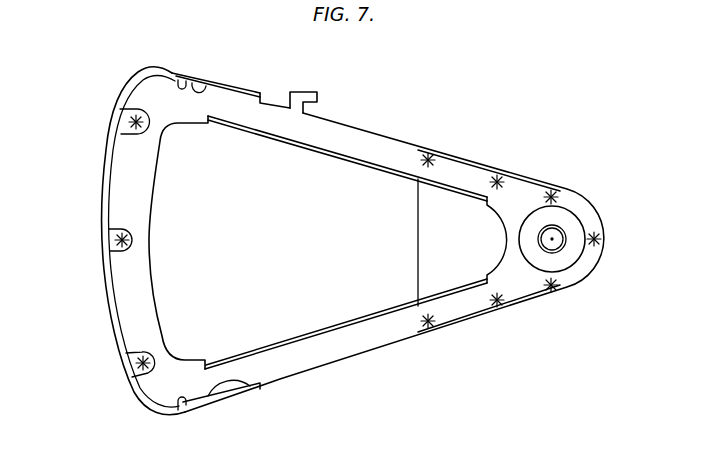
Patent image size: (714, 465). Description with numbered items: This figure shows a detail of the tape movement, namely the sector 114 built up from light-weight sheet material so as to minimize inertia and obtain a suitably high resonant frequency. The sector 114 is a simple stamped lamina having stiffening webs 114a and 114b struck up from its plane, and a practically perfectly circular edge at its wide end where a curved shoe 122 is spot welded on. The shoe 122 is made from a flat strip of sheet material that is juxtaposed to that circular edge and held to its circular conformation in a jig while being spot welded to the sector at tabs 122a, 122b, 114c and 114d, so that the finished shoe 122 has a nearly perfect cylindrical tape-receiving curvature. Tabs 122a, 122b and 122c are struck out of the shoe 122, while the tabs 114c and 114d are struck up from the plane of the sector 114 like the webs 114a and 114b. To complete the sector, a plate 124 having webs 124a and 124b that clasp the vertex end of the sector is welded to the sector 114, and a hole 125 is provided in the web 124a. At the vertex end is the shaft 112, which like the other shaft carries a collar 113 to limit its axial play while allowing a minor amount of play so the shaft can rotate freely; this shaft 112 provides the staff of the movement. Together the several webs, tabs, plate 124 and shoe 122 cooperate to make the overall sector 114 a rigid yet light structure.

The shaft 112 is at (563, 236).
The collar 113 is at (291, 92).
The sector 114 is at (348, 188).
The stiffening web 114a is at (307, 341).
The stiffening web 114b is at (261, 140).
The tab 114c is at (194, 82).
The tab 114d is at (249, 392).
The curved shoe 122 is at (106, 160).
The tab 122a is at (148, 109).
The tab 122b is at (131, 234).
The tab 122c is at (149, 378).
The plate 124 is at (463, 248).
The web 124a is at (513, 313).
The web 124b is at (521, 175).
The hole 125 is at (431, 333).